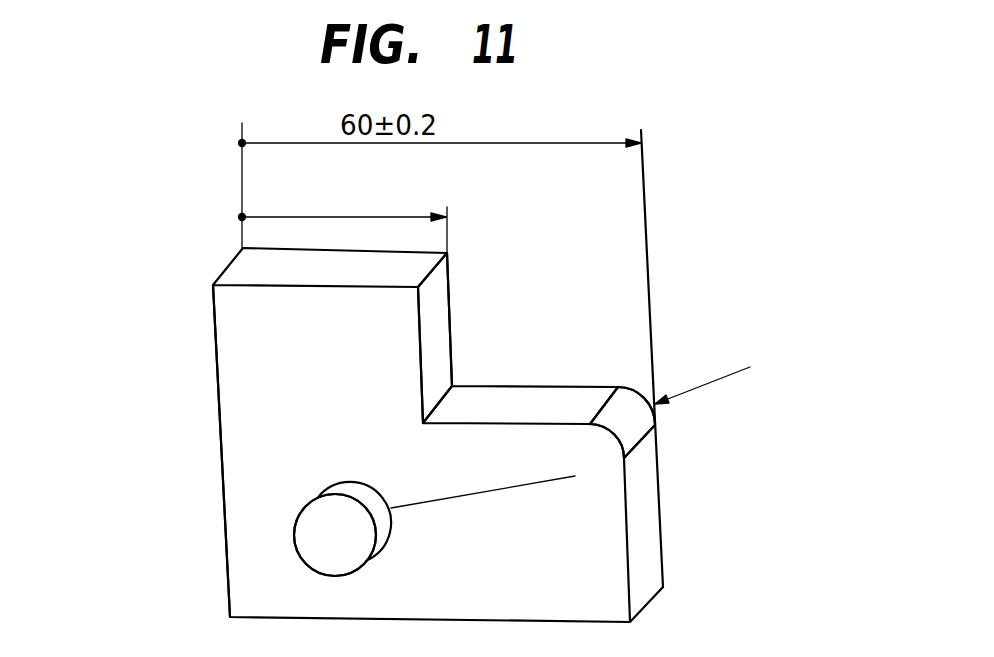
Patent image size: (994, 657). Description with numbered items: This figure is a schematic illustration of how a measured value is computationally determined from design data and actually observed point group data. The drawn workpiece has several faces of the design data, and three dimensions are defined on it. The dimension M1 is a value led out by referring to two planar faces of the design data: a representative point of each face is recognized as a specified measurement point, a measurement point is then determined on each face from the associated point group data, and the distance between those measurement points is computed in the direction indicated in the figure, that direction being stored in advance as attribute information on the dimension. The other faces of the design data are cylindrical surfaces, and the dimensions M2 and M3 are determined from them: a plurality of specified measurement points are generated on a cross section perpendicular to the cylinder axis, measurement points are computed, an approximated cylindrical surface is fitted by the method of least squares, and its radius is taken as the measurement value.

The dimension M1 is at (284, 195).
The dimension M2 is at (725, 342).
The dimension M3 is at (563, 465).